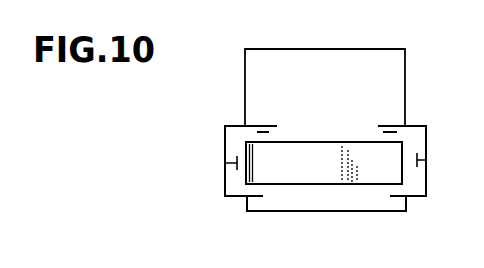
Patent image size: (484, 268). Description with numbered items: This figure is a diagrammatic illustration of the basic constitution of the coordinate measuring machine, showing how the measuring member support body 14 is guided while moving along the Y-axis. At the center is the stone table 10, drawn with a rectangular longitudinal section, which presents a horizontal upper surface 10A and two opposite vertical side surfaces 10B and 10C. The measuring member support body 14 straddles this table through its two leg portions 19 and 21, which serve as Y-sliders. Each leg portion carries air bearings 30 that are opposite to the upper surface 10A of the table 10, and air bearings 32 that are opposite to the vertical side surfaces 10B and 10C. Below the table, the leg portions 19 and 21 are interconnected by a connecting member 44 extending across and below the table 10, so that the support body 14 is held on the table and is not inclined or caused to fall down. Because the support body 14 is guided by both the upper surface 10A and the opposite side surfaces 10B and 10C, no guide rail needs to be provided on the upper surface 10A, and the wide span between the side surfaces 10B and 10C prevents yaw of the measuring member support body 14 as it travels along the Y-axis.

The stone table 10 is at (328, 185).
The horizontal upper surface 10A is at (321, 142).
The vertical side surface 10B is at (258, 196).
The vertical side surface 10C is at (400, 186).
The measuring member support body 14 is at (321, 49).
The leg portion 19 is at (228, 126).
The leg portion 21 is at (427, 127).
The air bearing 30 is at (263, 132).
The air bearing 32 is at (225, 163).
The connecting member 44 is at (335, 211).